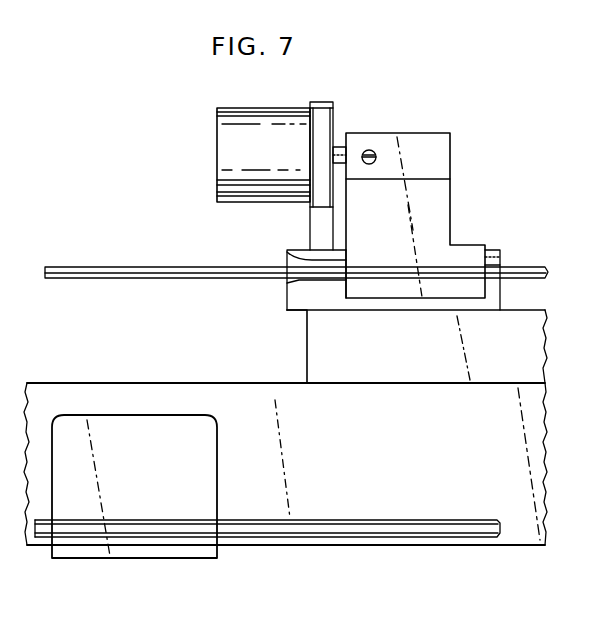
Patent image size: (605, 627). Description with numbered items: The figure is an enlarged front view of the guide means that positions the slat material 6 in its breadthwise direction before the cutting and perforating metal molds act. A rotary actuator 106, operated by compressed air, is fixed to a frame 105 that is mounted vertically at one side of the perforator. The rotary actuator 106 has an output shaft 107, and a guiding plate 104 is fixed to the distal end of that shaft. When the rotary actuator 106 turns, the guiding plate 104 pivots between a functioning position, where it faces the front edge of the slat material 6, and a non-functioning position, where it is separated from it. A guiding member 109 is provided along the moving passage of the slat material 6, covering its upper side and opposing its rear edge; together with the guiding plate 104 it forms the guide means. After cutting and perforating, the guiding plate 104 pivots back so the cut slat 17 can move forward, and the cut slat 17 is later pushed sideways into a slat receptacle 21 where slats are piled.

The slat material 6 is at (177, 265).
The cut slat 17 is at (351, 518).
The slat receptacle 21 is at (218, 446).
The guiding plate 104 is at (450, 196).
The frame 105 is at (327, 102).
The rotary actuator 106 is at (216, 127).
The output shaft 107 is at (338, 146).
The guiding member 109 is at (498, 250).